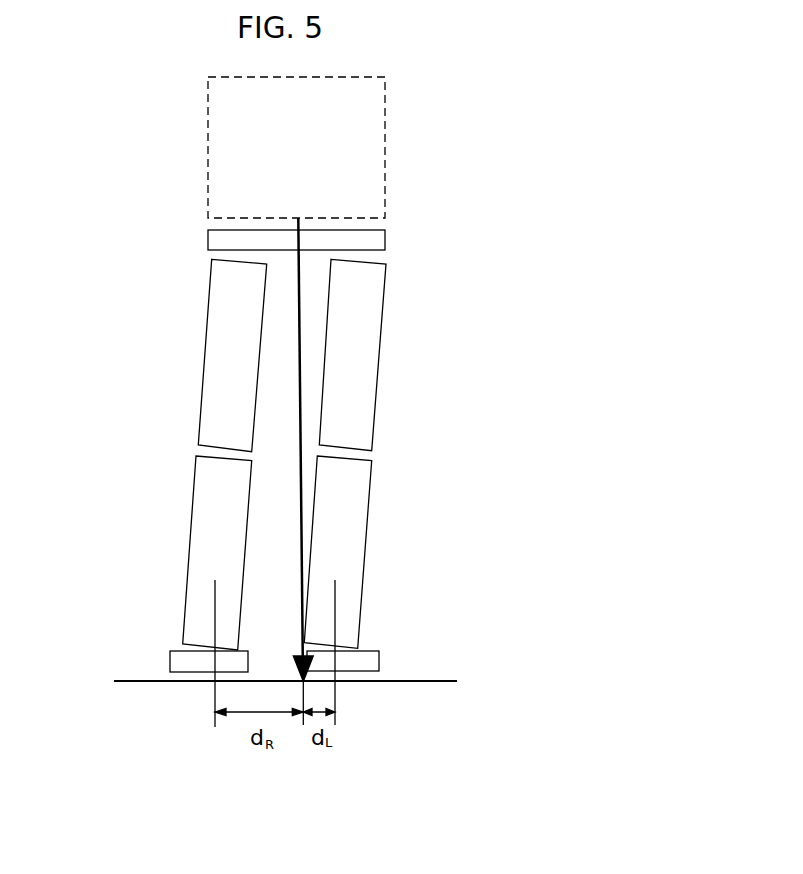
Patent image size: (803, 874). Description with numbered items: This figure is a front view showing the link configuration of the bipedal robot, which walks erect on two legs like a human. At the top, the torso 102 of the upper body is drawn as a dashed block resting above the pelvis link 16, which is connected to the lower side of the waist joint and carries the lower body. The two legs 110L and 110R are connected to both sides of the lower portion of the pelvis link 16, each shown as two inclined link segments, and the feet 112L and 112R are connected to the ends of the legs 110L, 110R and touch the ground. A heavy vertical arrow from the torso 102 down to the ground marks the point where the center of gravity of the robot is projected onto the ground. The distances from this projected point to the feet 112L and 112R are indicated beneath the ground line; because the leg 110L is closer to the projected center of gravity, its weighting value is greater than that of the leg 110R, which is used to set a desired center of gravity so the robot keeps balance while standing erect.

The torso 102 is at (385, 143).
The pelvis link 16 is at (385, 237).
The right leg 110R is at (207, 368).
The left leg 110L is at (374, 366).
The right foot 112R is at (170, 658).
The left foot 112L is at (380, 657).